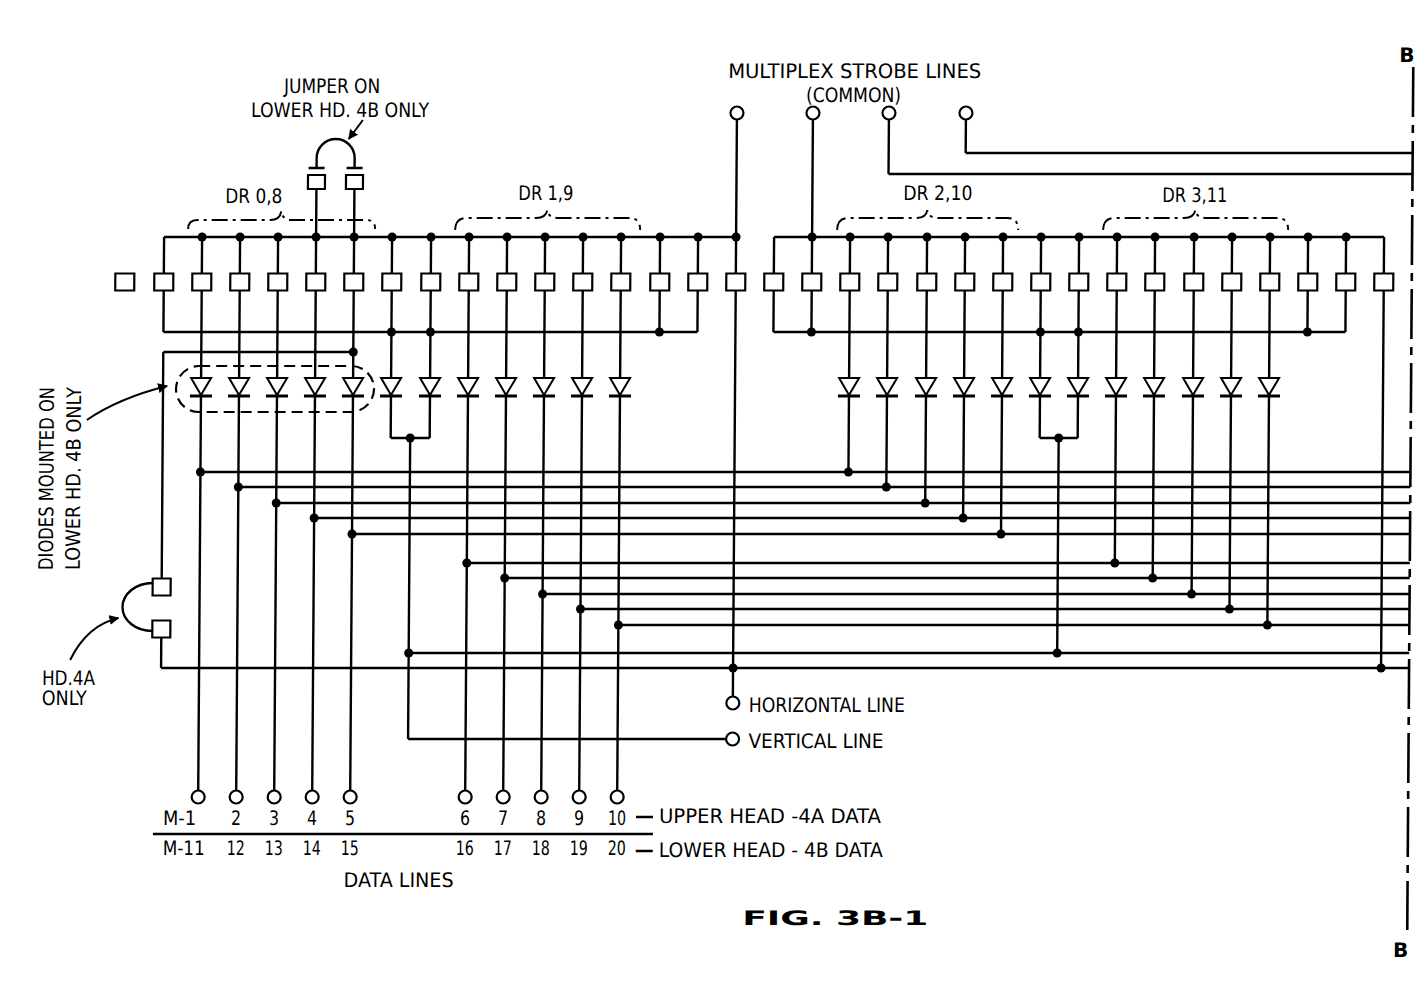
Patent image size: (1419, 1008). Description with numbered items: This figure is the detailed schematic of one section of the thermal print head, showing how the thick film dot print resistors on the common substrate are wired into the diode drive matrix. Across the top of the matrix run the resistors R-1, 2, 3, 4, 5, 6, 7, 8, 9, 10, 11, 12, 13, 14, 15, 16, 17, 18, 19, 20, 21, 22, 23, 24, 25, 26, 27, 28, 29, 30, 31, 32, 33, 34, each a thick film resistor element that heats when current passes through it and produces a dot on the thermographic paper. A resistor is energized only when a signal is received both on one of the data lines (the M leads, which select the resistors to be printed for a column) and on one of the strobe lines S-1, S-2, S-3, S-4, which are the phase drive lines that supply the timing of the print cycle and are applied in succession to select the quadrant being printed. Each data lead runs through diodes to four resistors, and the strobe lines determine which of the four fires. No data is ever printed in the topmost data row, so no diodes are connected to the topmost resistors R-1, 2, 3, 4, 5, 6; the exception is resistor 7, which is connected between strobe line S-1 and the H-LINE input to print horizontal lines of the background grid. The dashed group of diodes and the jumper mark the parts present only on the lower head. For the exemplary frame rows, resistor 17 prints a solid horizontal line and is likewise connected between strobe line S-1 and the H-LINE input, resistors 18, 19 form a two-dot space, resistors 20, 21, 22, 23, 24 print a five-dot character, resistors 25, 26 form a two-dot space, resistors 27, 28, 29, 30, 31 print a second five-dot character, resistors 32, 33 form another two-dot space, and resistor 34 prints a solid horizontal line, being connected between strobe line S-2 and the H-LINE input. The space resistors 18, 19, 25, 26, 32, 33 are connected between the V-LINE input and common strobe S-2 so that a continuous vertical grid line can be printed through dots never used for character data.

The thick film resistor R-1 is at (124, 298).
The thick film resistor 2 is at (166, 298).
The thick film resistor 3 is at (204, 298).
The thick film resistor 4 is at (242, 298).
The thick film resistor 5 is at (280, 298).
The thick film resistor 6 is at (318, 298).
The thick film resistor 7 is at (356, 298).
The thick film resistor 8 is at (394, 298).
The thick film resistor 9 is at (433, 298).
The thick film resistor 10 is at (475, 298).
The thick film resistor 11 is at (513, 298).
The thick film resistor 12 is at (551, 298).
The thick film resistor 13 is at (589, 298).
The thick film resistor 14 is at (627, 298).
The thick film resistor 15 is at (666, 298).
The thick film resistor 16 is at (704, 298).
The thick film resistor 17 is at (742, 298).
The thick film resistor 18 is at (780, 298).
The thick film resistor 19 is at (818, 298).
The thick film resistor 20 is at (856, 298).
The thick film resistor 21 is at (894, 298).
The thick film resistor 22 is at (933, 298).
The thick film resistor 23 is at (971, 298).
The thick film resistor 24 is at (1009, 298).
The thick film resistor 25 is at (1047, 298).
The thick film resistor 26 is at (1085, 298).
The thick film resistor 27 is at (1123, 298).
The thick film resistor 28 is at (1161, 298).
The thick film resistor 29 is at (1200, 298).
The thick film resistor 30 is at (1238, 298).
The thick film resistor 31 is at (1276, 298).
The thick film resistor 32 is at (1314, 298).
The thick film resistor 33 is at (1352, 298).
The thick film resistor 34 is at (1390, 298).
The strobe line S-1 is at (717, 130).
The strobe line S-2 is at (796, 130).
The strobe line S-3 is at (874, 130).
The strobe line S-4 is at (952, 130).